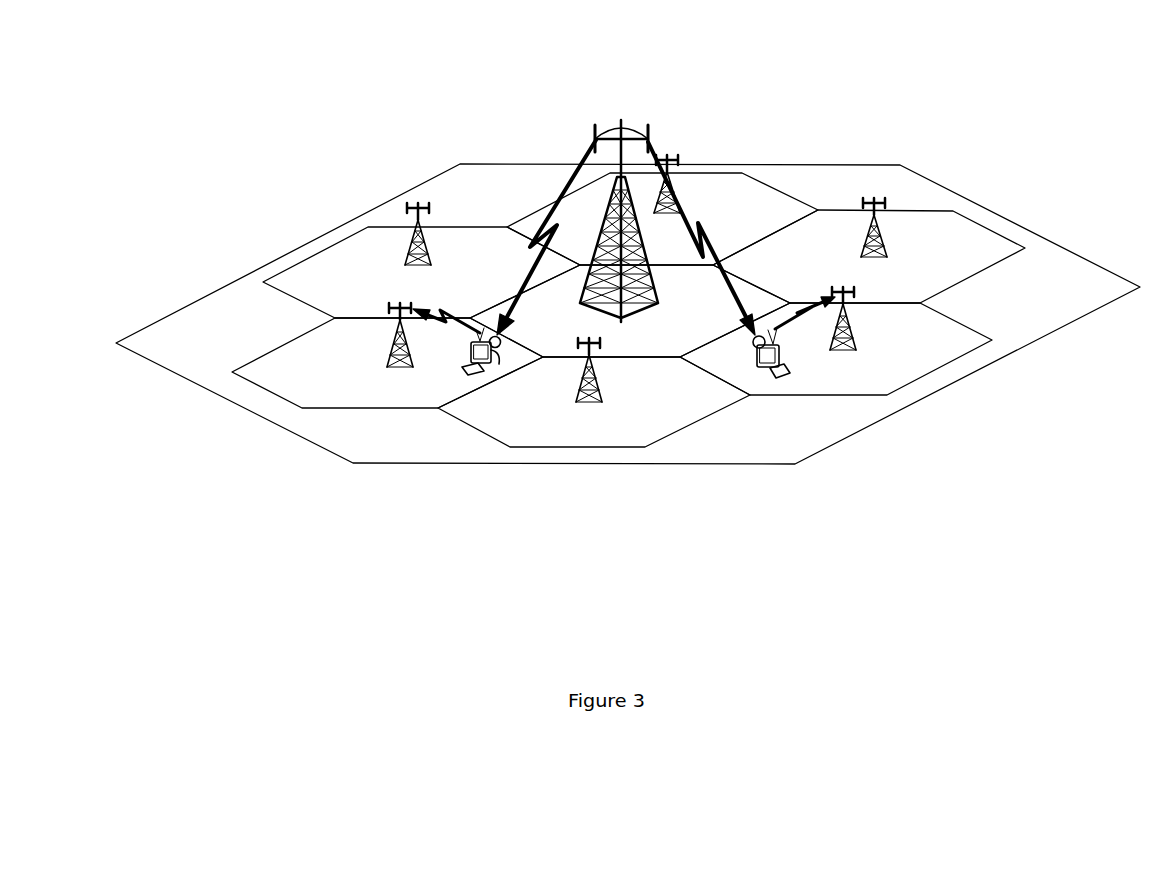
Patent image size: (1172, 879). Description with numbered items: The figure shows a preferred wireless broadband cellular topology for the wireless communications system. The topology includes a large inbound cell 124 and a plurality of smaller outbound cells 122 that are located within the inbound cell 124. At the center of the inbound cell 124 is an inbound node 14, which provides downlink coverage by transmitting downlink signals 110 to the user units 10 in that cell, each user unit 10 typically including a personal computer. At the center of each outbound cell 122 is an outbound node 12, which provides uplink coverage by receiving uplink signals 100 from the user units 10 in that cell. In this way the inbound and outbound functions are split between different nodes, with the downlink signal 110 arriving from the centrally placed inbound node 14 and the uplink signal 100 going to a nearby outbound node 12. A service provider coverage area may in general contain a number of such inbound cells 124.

The user unit 10 is at (463, 363).
The outbound node 12 is at (853, 330).
The inbound node 14 is at (180, 564).
The uplink signal 100 is at (813, 298).
The downlink signal 110 is at (550, 203).
The outbound cell 122 is at (442, 387).
The inbound cell 124 is at (262, 328).